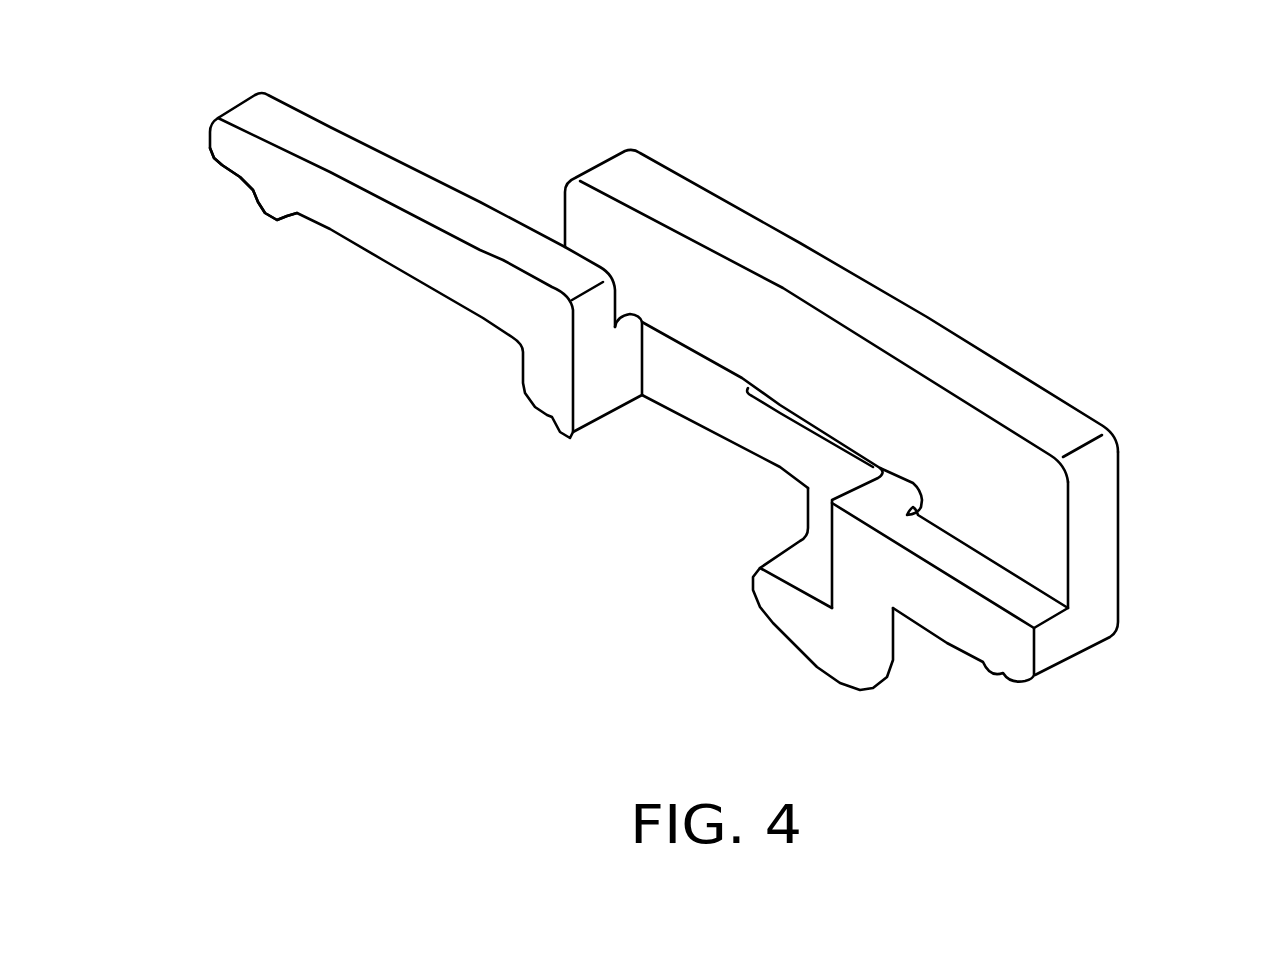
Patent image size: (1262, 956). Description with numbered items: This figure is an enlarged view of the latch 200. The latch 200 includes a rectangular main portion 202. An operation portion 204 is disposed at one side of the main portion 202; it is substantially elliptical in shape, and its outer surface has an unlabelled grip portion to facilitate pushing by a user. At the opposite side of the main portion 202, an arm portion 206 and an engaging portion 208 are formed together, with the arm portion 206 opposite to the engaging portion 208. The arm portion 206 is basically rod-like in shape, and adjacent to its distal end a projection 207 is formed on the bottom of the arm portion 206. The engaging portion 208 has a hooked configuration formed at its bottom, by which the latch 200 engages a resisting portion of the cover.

The latch 200 is at (800, 188).
The main portion 202 is at (1005, 402).
The operation portion 204 is at (927, 317).
The arm portion 206 is at (360, 165).
The projection 207 is at (268, 200).
The engaging portion 208 is at (847, 645).